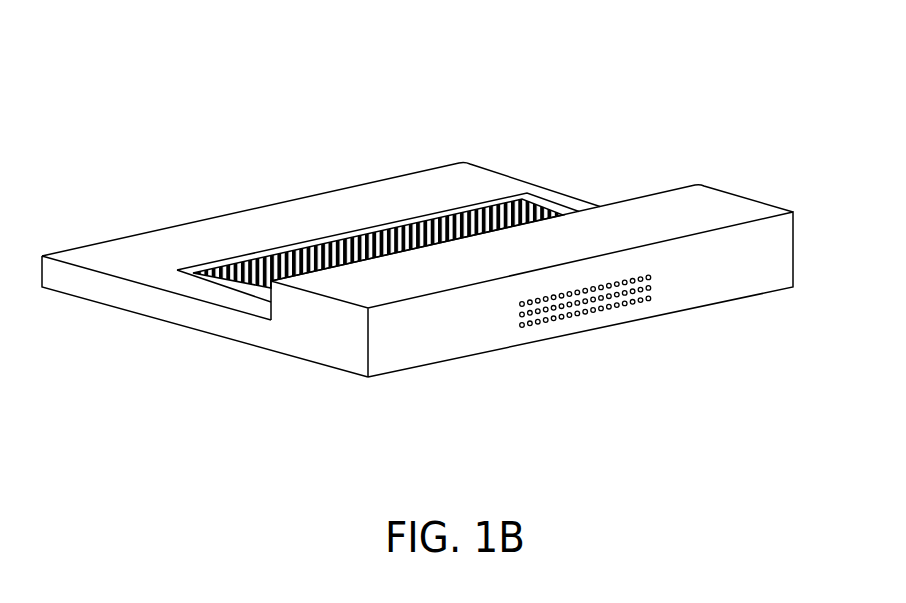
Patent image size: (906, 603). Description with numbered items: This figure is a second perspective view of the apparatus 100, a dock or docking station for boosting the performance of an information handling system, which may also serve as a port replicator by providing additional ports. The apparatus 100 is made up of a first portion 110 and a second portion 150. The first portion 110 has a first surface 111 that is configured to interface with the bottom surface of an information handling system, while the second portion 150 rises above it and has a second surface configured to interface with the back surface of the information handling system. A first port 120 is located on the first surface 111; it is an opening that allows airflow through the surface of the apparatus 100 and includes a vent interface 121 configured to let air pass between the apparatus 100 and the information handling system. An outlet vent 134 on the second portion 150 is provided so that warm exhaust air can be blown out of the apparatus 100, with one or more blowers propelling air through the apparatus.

The apparatus 100 is at (94, 73).
The first portion 110 is at (42, 295).
The first surface 111 is at (92, 248).
The first port 120 is at (257, 258).
The vent interface 121 is at (284, 258).
The outlet vent 134 is at (617, 309).
The second portion 150 is at (268, 367).